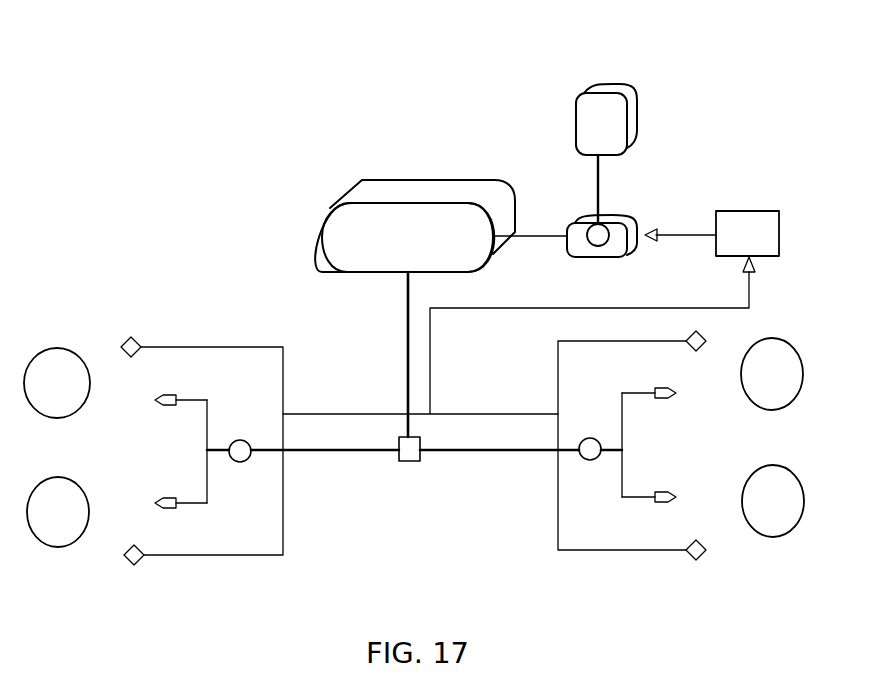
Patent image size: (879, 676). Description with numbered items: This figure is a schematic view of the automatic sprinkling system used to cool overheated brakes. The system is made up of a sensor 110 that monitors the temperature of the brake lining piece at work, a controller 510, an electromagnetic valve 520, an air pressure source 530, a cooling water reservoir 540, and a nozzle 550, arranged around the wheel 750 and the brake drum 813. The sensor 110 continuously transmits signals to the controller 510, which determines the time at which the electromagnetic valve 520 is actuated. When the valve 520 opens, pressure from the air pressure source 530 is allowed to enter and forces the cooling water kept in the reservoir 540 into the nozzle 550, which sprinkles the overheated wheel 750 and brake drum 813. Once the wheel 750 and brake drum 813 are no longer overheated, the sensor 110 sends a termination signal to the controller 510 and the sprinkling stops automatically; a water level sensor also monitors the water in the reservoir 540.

The sensor 110 is at (135, 330).
The controller 510 is at (768, 210).
The electromagnetic valve 520 is at (622, 213).
The air pressure source 530 is at (622, 83).
The cooling water reservoir 540 is at (372, 186).
The nozzle 550 is at (165, 397).
The wheel 750 is at (48, 348).
The brake drum 813 is at (45, 548).